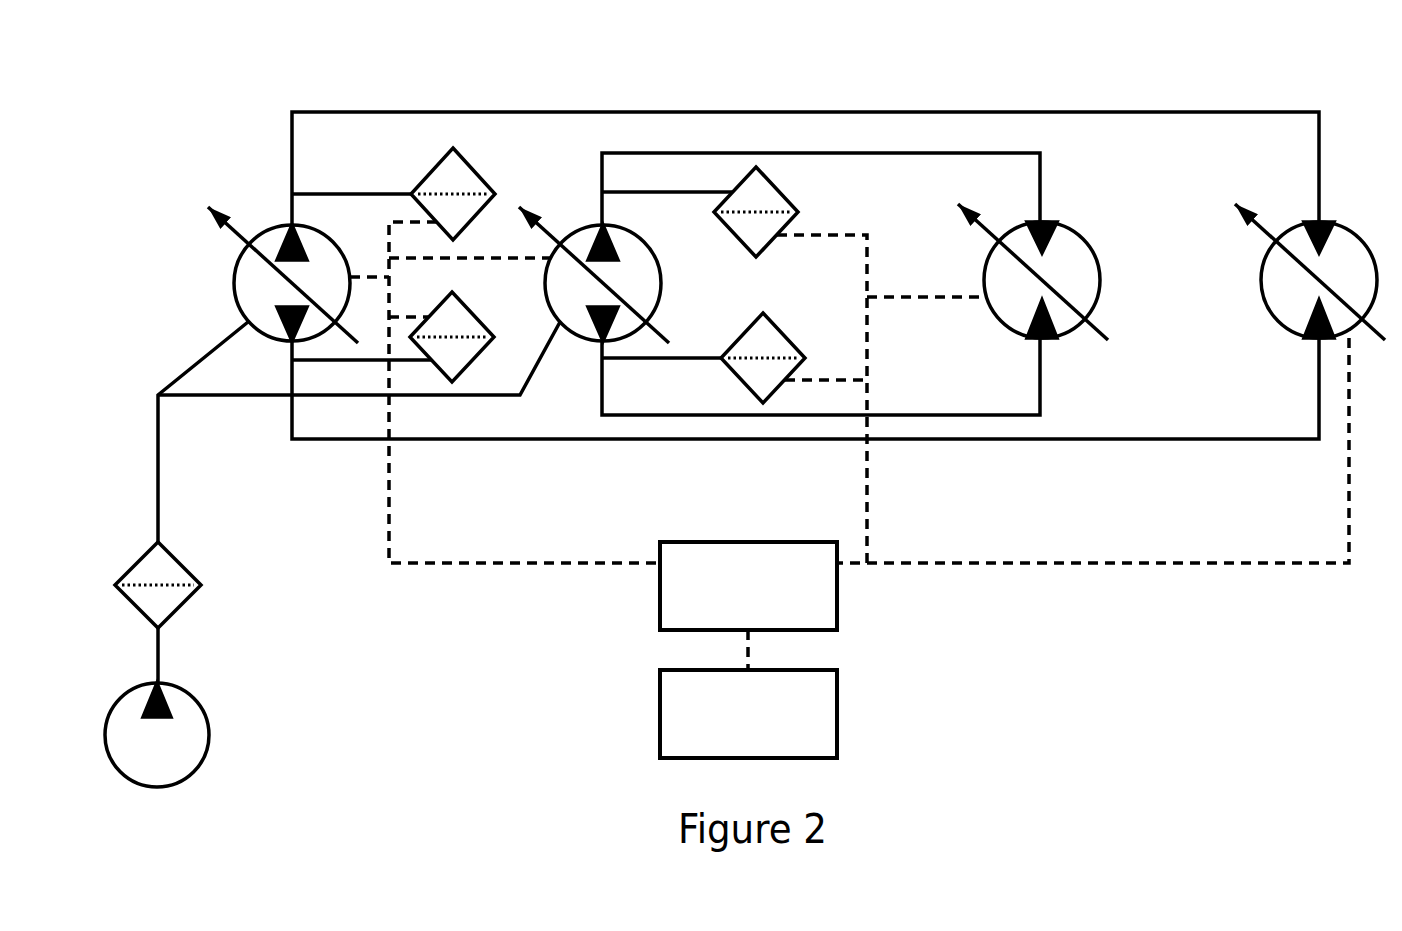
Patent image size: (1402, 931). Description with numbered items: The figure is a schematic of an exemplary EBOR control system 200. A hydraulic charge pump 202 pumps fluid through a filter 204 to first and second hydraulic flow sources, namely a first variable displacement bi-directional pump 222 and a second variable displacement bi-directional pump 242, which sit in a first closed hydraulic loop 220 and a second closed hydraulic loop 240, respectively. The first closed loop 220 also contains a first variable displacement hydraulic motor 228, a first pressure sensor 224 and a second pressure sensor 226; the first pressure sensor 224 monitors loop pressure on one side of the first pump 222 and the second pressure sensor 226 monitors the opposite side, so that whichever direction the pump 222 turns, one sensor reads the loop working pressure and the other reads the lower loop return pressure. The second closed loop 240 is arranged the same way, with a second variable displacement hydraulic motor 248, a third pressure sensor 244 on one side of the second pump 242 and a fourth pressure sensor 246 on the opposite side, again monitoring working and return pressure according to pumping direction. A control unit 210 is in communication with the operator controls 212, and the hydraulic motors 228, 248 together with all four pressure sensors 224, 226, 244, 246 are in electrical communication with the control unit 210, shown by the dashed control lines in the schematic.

The EBOR control system 200 is at (1042, 73).
The hydraulic charge pump 202 is at (205, 710).
The filter 204 is at (187, 565).
The control unit 210 is at (743, 540).
The operator controls 212 is at (838, 700).
The first closed hydraulic loop 220 is at (1188, 123).
The first variable displacement bi-directional pump 222 is at (233, 283).
The first pressure sensor 224 is at (477, 172).
The second pressure sensor 226 is at (477, 317).
The first variable displacement hydraulic motor 228 is at (1258, 272).
The second closed hydraulic loop 240 is at (1055, 187).
The second variable displacement bi-directional pump 242 is at (660, 293).
The third pressure sensor 244 is at (783, 193).
The fourth pressure sensor 246 is at (785, 343).
The second variable displacement hydraulic motor 248 is at (984, 269).